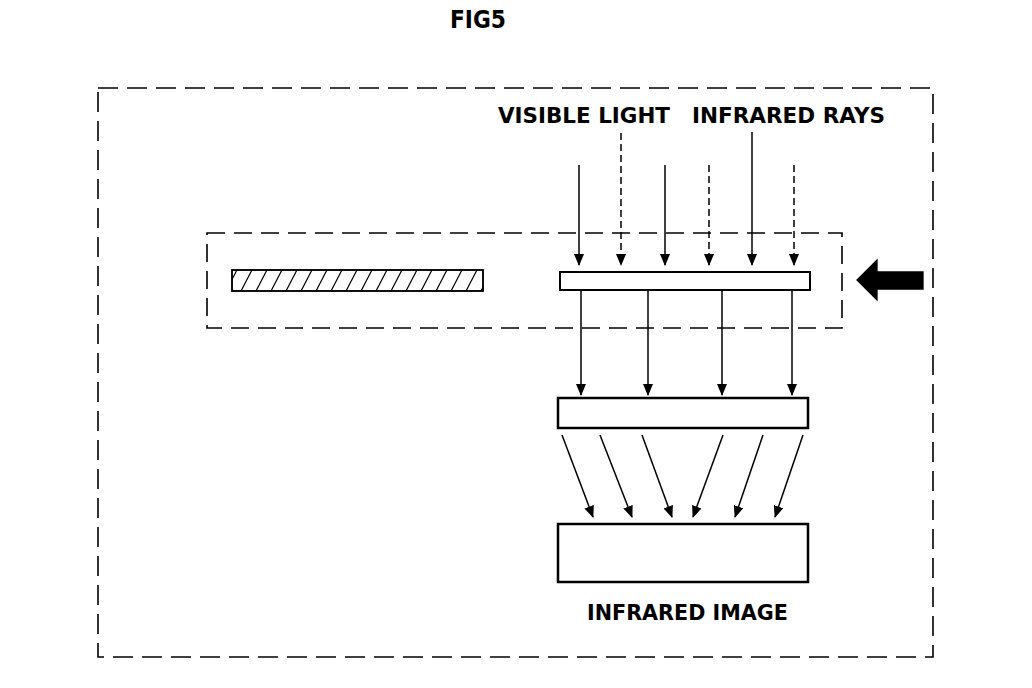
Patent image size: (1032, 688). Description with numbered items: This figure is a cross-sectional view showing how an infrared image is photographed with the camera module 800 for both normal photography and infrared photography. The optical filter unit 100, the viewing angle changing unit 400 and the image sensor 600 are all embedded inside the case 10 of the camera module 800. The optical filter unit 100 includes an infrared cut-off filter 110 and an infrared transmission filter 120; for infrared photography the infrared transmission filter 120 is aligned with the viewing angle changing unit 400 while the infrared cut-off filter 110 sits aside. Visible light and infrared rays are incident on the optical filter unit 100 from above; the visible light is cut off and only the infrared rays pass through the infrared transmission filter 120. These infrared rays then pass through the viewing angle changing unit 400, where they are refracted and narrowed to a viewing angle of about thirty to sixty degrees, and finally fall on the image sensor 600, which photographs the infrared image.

The case 10 is at (98, 180).
The camera module 800 is at (222, 210).
The optical filter unit 100 is at (390, 233).
The infrared cut-off filter 110 is at (232, 277).
The infrared transmission filter 120 is at (805, 292).
The viewing angle changing unit 400 is at (555, 414).
The image sensor 600 is at (555, 548).